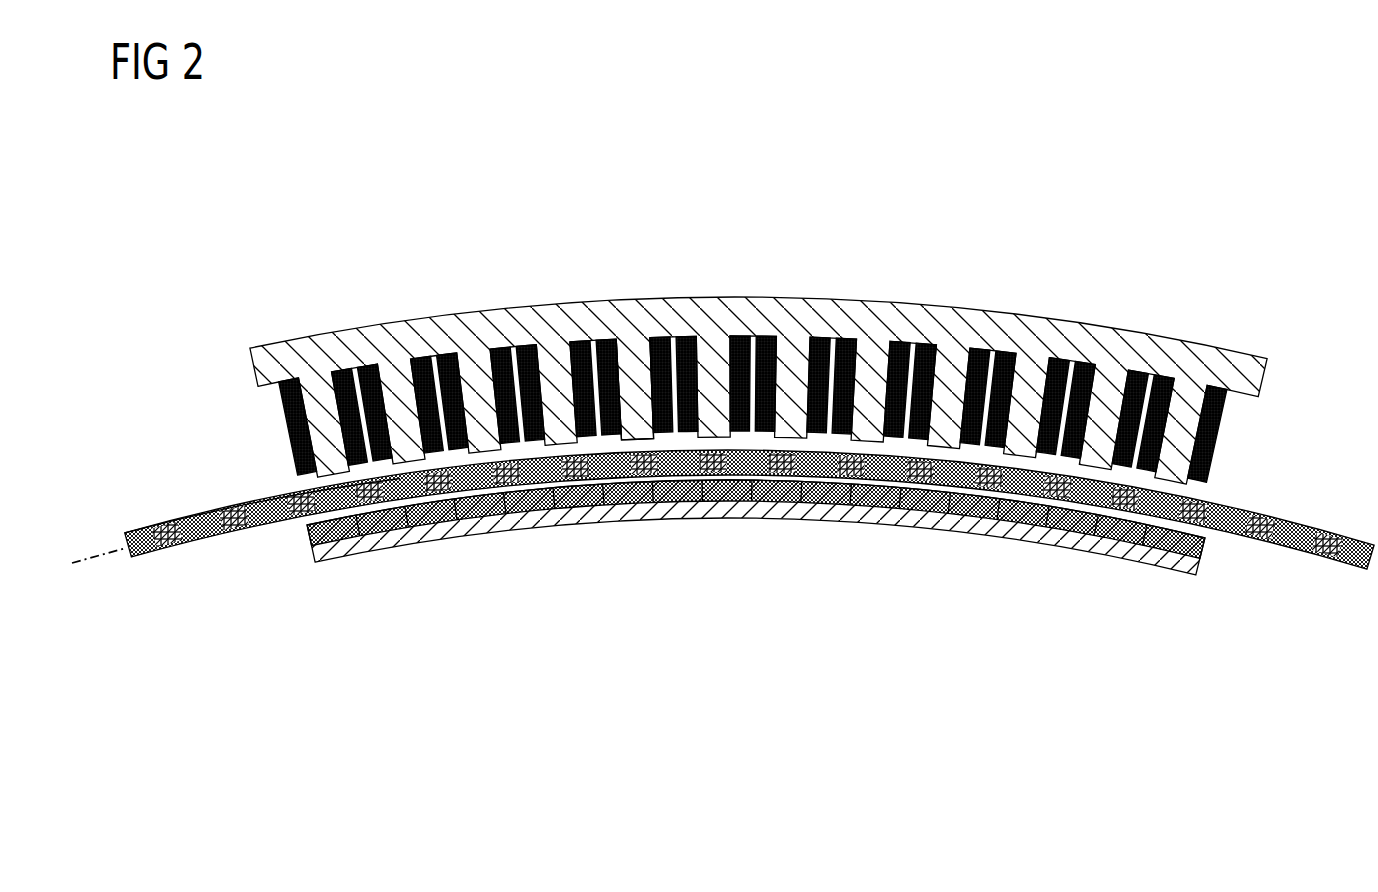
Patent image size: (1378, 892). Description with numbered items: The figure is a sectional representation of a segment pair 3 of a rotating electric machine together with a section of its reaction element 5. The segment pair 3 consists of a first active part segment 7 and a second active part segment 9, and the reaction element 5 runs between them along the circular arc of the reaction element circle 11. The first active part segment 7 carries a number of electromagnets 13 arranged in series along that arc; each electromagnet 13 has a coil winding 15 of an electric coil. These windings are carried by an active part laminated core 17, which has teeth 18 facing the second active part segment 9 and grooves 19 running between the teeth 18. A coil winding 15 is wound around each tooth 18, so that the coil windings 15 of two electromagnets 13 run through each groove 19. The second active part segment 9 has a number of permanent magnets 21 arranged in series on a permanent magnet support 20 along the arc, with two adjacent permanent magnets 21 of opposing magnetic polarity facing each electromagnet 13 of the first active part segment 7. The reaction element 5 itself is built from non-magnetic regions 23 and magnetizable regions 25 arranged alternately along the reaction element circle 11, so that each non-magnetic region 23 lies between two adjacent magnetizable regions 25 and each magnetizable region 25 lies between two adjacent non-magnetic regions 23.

The segment pair 3 is at (176, 412).
The reaction element 5 is at (142, 523).
The first active part segment 7 is at (248, 386).
The second active part segment 9 is at (298, 537).
The reaction element circle 11 is at (72, 563).
The electromagnet 13 is at (1232, 443).
The coil winding 15 is at (343, 368).
The active part laminated core 17 is at (430, 342).
The tooth 18 is at (637, 382).
The groove 19 is at (517, 345).
The permanent magnet support 20 is at (580, 517).
The permanent magnet 21 is at (370, 537).
The non-magnetic region 23 is at (215, 535).
The magnetizable region 25 is at (187, 542).